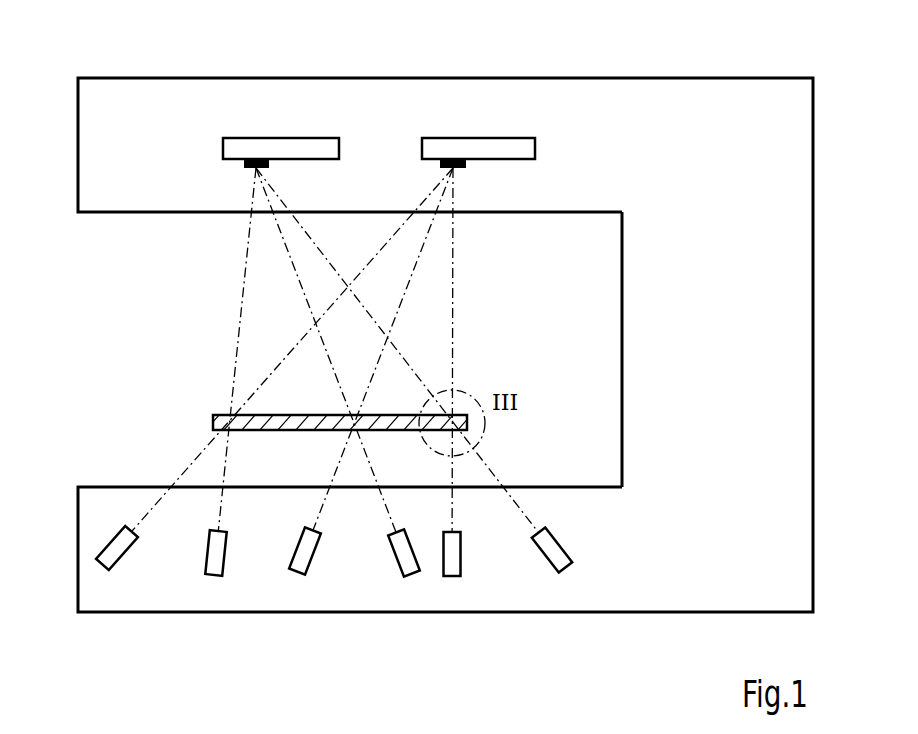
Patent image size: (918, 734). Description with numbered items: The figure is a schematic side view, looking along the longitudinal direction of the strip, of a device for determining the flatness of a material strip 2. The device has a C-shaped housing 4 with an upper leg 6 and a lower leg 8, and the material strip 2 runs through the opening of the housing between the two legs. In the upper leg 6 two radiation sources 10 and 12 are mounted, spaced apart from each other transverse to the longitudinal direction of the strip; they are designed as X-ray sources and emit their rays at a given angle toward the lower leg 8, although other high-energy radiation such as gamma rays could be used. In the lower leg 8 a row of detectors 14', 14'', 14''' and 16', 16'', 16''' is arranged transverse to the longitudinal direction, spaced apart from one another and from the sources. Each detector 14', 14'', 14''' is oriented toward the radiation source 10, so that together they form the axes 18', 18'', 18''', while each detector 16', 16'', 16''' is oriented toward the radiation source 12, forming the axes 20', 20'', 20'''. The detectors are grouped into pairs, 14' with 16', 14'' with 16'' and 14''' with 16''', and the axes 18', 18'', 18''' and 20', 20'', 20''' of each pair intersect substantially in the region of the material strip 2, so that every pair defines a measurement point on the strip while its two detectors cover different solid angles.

The material strip 2 is at (213, 422).
The C-shaped housing 4 is at (775, 300).
The upper leg 6 is at (158, 100).
The lower leg 8 is at (153, 590).
The radiation source 10 is at (510, 147).
The radiation source 12 is at (300, 147).
The detector 14' is at (474, 606).
The detector 14'' is at (299, 603).
The detector 14''' is at (99, 603).
The detector 16' is at (569, 603).
The detector 16'' is at (413, 604).
The detector 16''' is at (199, 605).
The axis 18' is at (487, 350).
The axis 18'' is at (420, 349).
The axis 18''' is at (333, 350).
The axis 20' is at (352, 350).
The axis 20'' is at (278, 350).
The axis 20''' is at (204, 349).